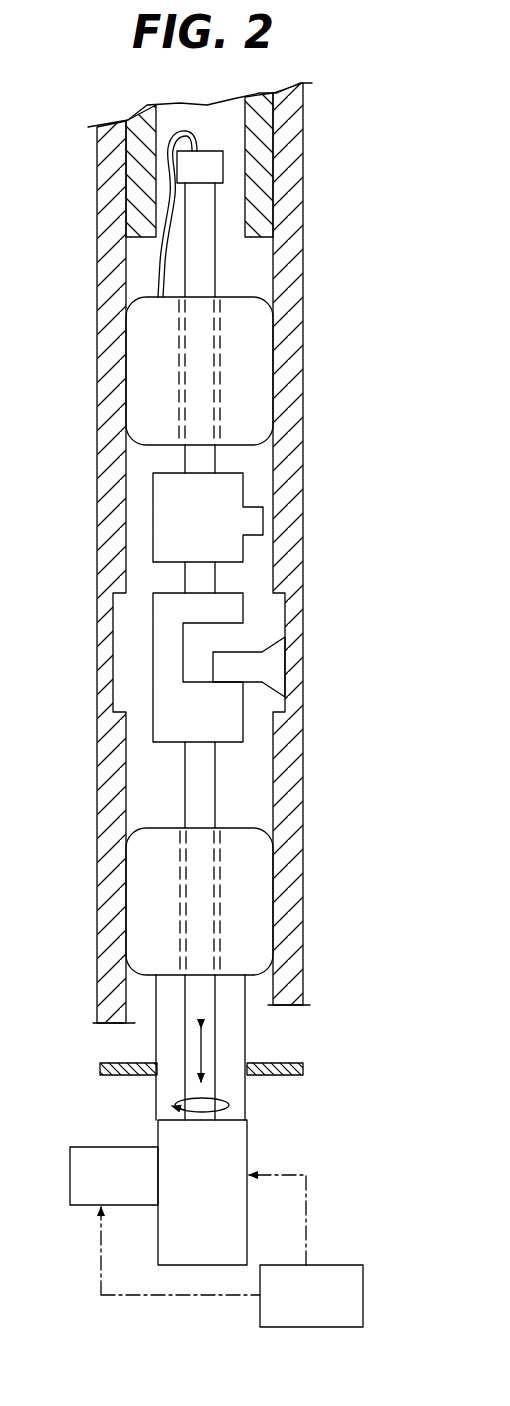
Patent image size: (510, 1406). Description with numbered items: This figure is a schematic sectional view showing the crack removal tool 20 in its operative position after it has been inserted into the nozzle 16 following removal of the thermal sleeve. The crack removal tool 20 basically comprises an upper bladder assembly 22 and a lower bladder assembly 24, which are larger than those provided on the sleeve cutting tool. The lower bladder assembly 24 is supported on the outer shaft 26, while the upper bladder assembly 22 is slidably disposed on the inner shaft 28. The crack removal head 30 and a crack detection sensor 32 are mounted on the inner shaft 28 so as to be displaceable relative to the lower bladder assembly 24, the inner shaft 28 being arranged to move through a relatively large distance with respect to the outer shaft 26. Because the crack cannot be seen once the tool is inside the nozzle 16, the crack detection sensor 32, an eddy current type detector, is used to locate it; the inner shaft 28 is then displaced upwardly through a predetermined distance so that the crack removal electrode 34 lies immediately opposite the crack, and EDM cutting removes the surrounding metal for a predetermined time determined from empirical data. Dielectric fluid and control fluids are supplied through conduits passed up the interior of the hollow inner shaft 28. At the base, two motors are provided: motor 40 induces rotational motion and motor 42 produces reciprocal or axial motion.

The nozzle 16 is at (105, 227).
The crack removal tool 20 is at (112, 1085).
The upper bladder assembly 22 is at (140, 337).
The lower bladder assembly 24 is at (262, 922).
The outer shaft 26 is at (247, 1045).
The inner shaft 28 is at (217, 1087).
The crack removal head 30 is at (167, 608).
The crack detection sensor 32 is at (167, 507).
The crack removal electrode 34 is at (277, 668).
The motor for rotational motion 40 is at (237, 1145).
The motor for axial motion 42 is at (78, 1168).